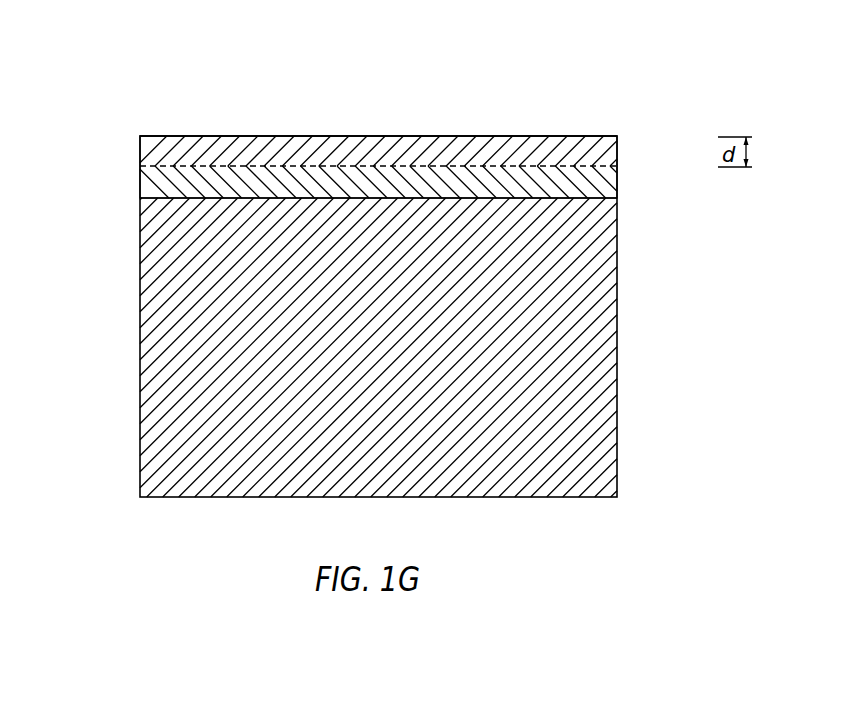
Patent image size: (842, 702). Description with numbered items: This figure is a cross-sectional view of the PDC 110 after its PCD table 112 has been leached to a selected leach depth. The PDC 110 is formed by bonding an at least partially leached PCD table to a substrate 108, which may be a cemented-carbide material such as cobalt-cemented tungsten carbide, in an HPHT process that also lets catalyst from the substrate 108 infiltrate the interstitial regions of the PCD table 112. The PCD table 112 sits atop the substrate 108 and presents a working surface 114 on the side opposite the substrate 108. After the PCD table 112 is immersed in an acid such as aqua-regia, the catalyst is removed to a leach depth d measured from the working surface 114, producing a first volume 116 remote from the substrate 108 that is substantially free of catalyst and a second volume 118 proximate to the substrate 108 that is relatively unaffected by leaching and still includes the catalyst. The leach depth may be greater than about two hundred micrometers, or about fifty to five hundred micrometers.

The substrate 108 is at (617, 340).
The PDC 110 is at (583, 86).
The PCD table 112 is at (630, 136).
The working surface 114 is at (172, 136).
The first volume 116 is at (127, 137).
The second volume 118 is at (127, 168).